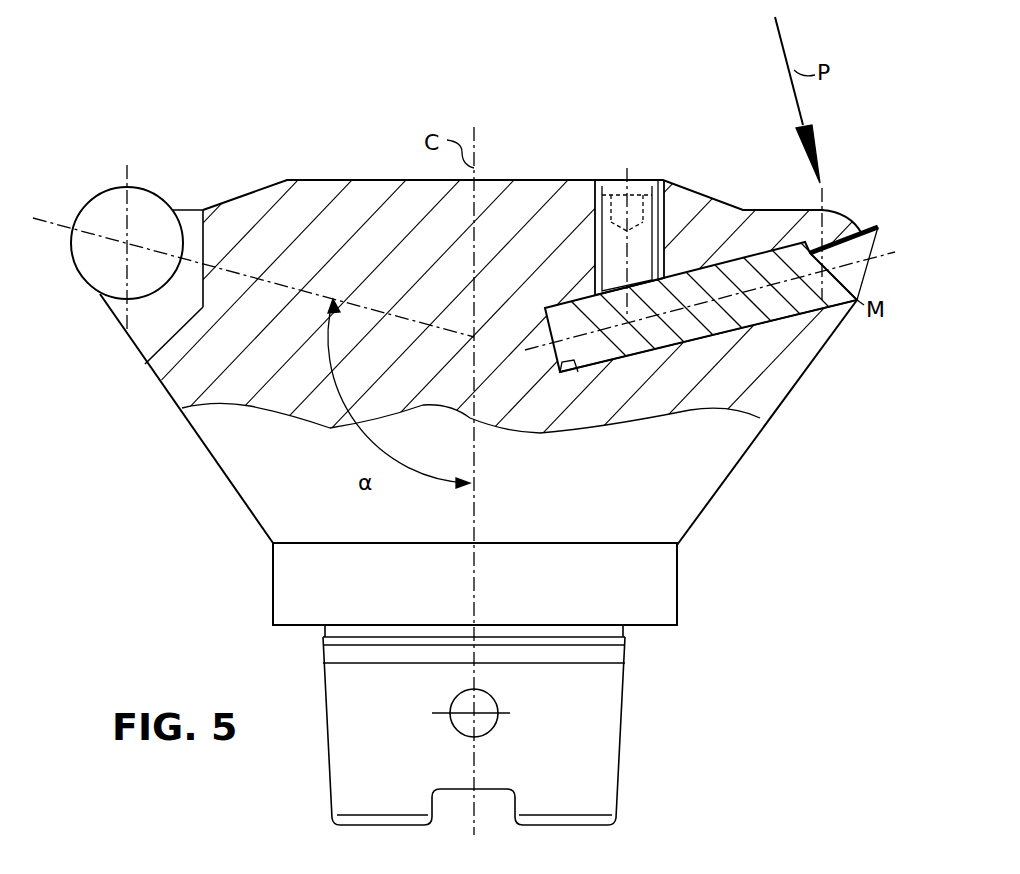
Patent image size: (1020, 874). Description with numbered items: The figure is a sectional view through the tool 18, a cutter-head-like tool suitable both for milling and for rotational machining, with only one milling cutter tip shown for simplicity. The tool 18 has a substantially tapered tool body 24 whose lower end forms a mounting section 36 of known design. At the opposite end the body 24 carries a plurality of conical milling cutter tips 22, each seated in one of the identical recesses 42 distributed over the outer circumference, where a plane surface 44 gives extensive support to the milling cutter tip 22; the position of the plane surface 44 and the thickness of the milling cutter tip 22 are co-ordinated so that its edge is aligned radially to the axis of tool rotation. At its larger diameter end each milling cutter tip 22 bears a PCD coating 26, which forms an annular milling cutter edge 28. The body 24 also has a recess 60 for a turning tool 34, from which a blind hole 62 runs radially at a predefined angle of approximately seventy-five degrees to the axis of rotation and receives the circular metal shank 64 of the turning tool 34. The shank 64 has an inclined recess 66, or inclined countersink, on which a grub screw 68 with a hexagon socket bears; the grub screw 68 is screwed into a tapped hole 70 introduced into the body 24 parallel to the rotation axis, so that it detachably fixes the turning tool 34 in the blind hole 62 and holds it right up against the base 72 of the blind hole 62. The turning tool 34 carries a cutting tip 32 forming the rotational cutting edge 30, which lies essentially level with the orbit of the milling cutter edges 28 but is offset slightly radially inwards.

The tool 18 is at (337, 178).
The milling cutter tip 22 is at (142, 206).
The tool body 24 is at (300, 505).
The coating 26 is at (166, 237).
The milling cutter edge 28 is at (73, 228).
The rotational cutting edge 30 is at (878, 227).
The cutting tip 32 is at (837, 230).
The turning tool 34 is at (782, 318).
The mounting section 36 is at (593, 750).
The recess 42 is at (150, 340).
The plane surface 44 is at (167, 330).
The recess 60 is at (768, 228).
The blind hole 62 is at (668, 345).
The shank 64 is at (697, 287).
The inclined recess 66 is at (640, 297).
The grub screw 68 is at (613, 252).
The tapped hole 70 is at (610, 187).
The base 72 is at (575, 372).